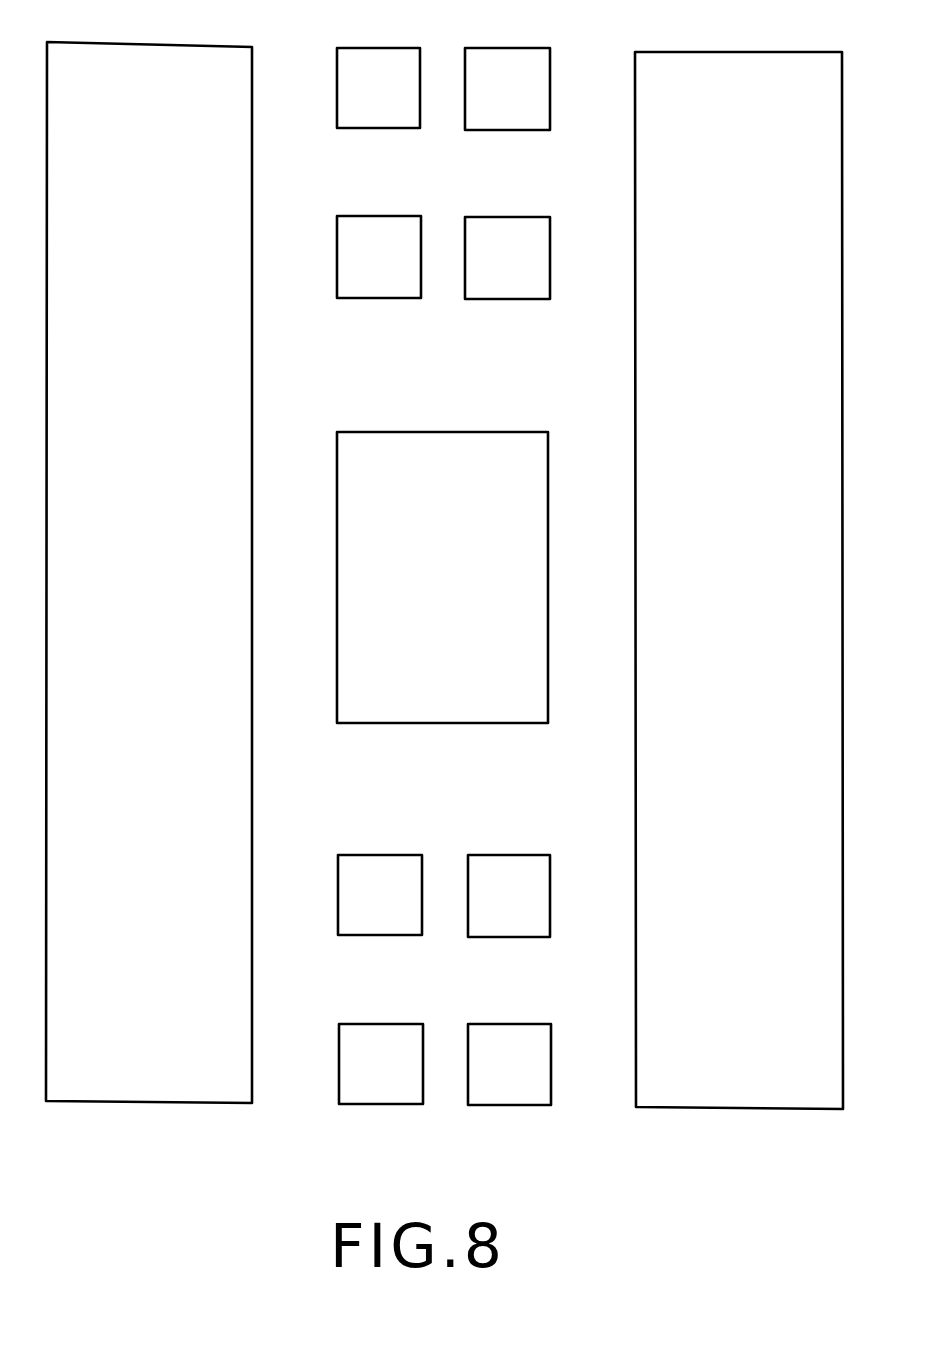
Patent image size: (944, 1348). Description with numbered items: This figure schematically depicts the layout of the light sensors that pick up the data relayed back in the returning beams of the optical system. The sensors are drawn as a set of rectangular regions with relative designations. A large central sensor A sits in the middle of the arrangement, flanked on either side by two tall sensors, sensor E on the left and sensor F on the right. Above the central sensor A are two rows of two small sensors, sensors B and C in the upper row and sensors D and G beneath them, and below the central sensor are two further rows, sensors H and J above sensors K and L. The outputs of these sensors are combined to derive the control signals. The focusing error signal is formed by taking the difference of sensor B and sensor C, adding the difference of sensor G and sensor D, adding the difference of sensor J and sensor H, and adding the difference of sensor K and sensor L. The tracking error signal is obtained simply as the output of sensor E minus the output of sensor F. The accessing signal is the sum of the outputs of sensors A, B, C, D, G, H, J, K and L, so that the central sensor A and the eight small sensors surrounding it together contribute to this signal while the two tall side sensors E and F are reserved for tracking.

The light sensor A is at (442, 577).
The light sensor B is at (378, 64).
The light sensor C is at (507, 65).
The light sensor D is at (379, 281).
The light sensor E is at (149, 572).
The light sensor F is at (739, 580).
The light sensor G is at (507, 283).
The light sensor H is at (380, 871).
The light sensor J is at (509, 872).
The light sensor K is at (381, 1086).
The light sensor L is at (509, 1087).